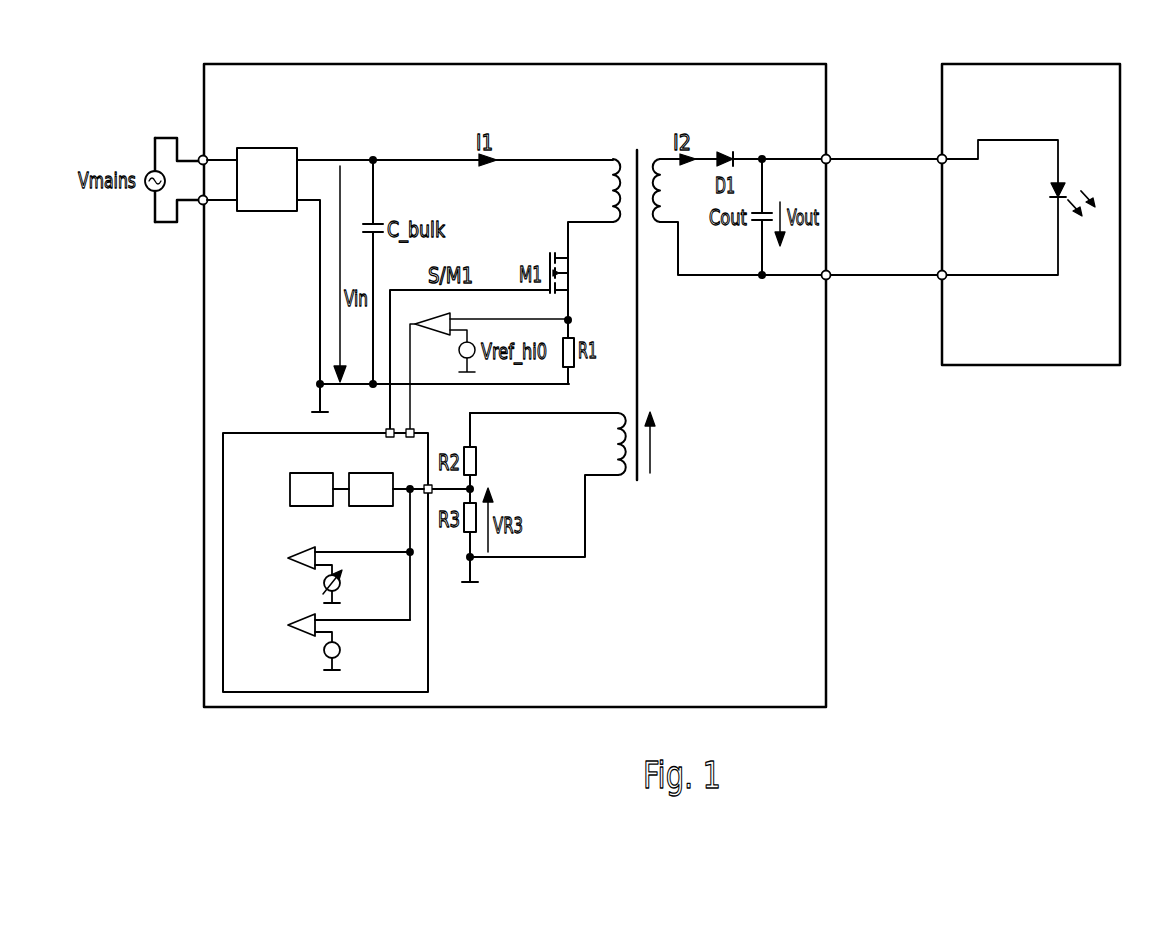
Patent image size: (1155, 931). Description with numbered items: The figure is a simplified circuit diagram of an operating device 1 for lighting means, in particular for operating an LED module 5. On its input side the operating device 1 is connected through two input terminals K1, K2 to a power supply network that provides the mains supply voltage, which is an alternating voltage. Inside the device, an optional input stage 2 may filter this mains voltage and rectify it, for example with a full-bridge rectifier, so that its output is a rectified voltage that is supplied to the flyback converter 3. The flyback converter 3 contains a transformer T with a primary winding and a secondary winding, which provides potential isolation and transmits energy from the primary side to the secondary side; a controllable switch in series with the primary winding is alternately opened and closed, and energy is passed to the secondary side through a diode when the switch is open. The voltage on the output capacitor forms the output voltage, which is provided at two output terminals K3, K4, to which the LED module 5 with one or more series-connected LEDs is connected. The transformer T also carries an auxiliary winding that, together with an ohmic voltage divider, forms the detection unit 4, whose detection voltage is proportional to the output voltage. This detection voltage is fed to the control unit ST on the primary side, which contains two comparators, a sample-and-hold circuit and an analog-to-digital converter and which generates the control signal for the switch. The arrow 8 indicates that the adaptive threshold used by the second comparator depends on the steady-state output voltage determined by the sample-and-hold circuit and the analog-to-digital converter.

The operating device 1 is at (828, 640).
The input stage 2 is at (270, 147).
The flyback converter 3 is at (767, 140).
The detection unit 4 is at (683, 400).
The LED module 5 is at (1030, 367).
The arrow 8 is at (320, 587).
The input terminal K1 is at (201, 156).
The input terminal K2 is at (201, 205).
The output terminal K3 is at (829, 153).
The output terminal K4 is at (829, 281).
The transformer T is at (636, 149).
The control unit ST is at (317, 549).